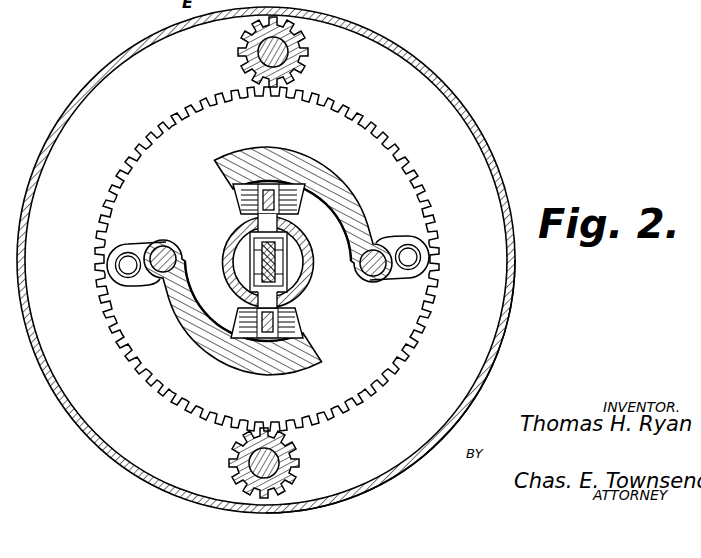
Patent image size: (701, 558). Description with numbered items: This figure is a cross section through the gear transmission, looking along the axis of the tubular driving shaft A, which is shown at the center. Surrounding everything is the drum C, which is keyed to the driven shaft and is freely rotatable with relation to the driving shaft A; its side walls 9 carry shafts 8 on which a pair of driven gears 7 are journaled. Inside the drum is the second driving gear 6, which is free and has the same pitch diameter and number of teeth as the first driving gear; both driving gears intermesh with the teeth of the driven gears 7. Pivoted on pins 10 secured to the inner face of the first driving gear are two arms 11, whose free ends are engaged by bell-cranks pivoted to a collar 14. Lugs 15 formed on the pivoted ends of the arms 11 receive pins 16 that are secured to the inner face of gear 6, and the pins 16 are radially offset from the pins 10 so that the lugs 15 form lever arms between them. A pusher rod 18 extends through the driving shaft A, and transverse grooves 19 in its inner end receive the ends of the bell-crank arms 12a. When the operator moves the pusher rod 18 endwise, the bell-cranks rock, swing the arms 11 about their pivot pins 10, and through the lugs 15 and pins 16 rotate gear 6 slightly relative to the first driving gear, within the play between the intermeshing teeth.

The second driving gear 6 is at (385, 131).
The driven gears 7 is at (304, 43).
The shafts 8 is at (258, 58).
The side walls 9 is at (460, 140).
The drum C is at (467, 58).
The pins 10 is at (376, 276).
The arms 11 is at (331, 172).
The bell-crank arms 12a is at (290, 233).
The collar 14 is at (300, 278).
The lugs 15 is at (404, 282).
The pins 16 is at (409, 248).
The pusher rod 18 is at (253, 270).
The transverse grooves 19 is at (284, 263).
The driving shaft A is at (300, 253).